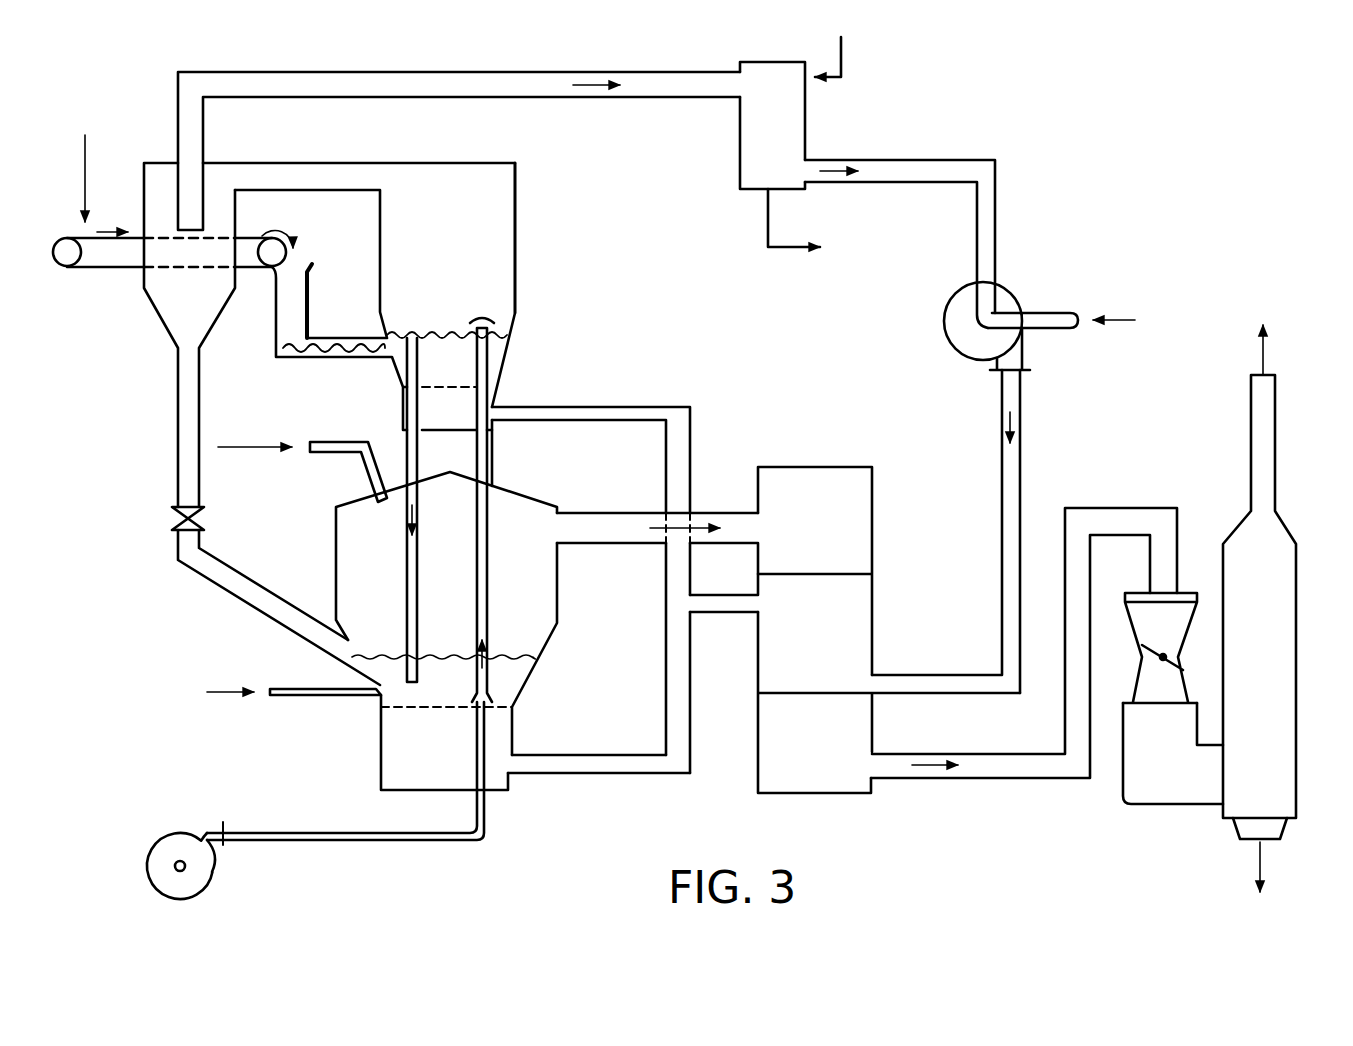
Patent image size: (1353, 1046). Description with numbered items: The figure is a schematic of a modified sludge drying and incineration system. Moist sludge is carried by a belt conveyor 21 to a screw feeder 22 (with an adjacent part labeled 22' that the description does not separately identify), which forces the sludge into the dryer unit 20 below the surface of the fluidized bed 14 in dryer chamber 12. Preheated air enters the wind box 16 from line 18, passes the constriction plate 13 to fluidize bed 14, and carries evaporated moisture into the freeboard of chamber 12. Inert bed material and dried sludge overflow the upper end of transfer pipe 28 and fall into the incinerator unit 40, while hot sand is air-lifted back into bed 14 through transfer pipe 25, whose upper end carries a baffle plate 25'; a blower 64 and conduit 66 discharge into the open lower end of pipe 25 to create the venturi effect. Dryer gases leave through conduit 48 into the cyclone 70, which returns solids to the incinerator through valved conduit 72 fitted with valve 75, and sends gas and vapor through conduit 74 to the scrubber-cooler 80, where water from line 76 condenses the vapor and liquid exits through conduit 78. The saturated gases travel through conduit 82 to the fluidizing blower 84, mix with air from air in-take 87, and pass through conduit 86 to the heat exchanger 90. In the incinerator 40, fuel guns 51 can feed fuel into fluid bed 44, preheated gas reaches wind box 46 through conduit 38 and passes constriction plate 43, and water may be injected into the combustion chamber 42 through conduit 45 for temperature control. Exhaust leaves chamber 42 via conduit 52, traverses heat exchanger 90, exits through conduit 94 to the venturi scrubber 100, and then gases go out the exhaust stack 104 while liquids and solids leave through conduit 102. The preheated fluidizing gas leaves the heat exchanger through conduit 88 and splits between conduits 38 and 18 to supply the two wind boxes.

The dryer chamber 12 is at (480, 273).
The constriction plate 13 is at (424, 392).
The fluidized bed 14 is at (460, 364).
The wind box 16 is at (430, 425).
The line 18 is at (575, 407).
The dryer unit 20 is at (516, 232).
The belt conveyor 21 is at (97, 270).
The screw feeder 22 is at (311, 264).
The feed trough 22' is at (339, 348).
The transfer pipe 25 is at (503, 515).
The baffle plate 25' is at (459, 303).
The transfer pipe 28 is at (407, 450).
The conduit 38 is at (590, 773).
The incinerator unit 40 is at (533, 491).
The combustion chamber 42 is at (527, 592).
The constriction plate 43 is at (412, 708).
The fluid bed 44 is at (457, 690).
The conduit 45 is at (362, 468).
The wind box 46 is at (400, 752).
The conduit 48 is at (336, 163).
The fuel gun 51 is at (300, 686).
The conduit 52 is at (612, 513).
The blower 64 is at (202, 865).
The conduit 66 is at (433, 843).
The cyclone 70 is at (143, 165).
The valved conduit 72 is at (178, 463).
The conduit 74 is at (445, 72).
The valve 75 is at (172, 521).
The line 76 is at (843, 56).
The conduit 78 is at (768, 218).
The scrubber-cooler 80 is at (806, 112).
The conduit 82 is at (997, 197).
The fluidizing blower 84 is at (1010, 297).
The conduit 86 is at (1007, 490).
The air in-take 87 is at (1050, 326).
The conduit 88 is at (729, 612).
The heat exchanger 90 is at (815, 467).
The conduit 94 is at (1012, 778).
The venturi scrubber 100 is at (1213, 484).
The conduit 102 is at (1252, 862).
The exhaust stack 104 is at (1272, 450).